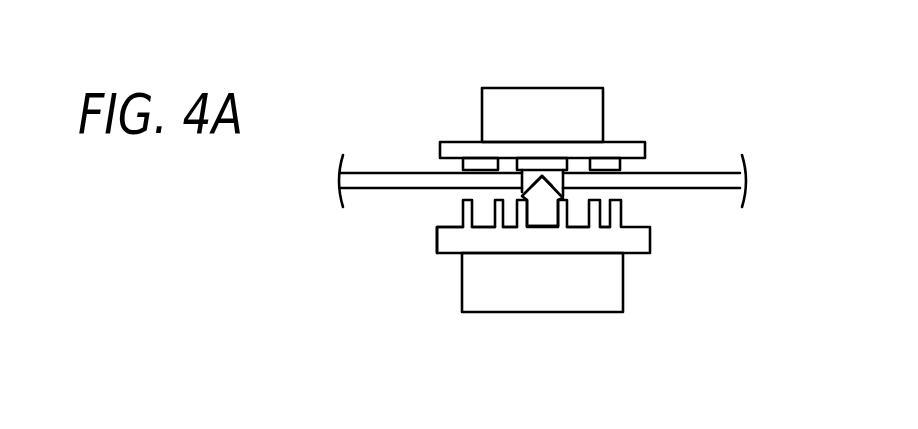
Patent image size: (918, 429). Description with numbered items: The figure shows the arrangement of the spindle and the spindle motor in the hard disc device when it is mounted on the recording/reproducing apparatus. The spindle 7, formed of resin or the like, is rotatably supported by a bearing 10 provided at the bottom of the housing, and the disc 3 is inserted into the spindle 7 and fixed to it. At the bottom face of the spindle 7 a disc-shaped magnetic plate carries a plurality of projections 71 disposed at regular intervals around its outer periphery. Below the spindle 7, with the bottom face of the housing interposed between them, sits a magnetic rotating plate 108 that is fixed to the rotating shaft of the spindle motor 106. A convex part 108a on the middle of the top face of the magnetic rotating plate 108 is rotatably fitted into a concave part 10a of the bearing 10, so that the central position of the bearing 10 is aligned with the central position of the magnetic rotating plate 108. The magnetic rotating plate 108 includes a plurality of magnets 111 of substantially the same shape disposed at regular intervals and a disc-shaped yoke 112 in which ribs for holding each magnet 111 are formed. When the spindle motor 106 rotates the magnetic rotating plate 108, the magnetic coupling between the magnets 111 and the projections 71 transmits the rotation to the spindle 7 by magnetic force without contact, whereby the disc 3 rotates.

The spindle 7 is at (583, 88).
The projections 71 is at (622, 167).
The disc 3 is at (398, 173).
The bearing 10 is at (563, 170).
The concave part 10a is at (568, 178).
The magnetic rotating plate 108 is at (677, 248).
The convex part 108a is at (535, 192).
The yoke 112 is at (440, 238).
The magnets 111 is at (477, 223).
The spindle motor 106 is at (623, 290).